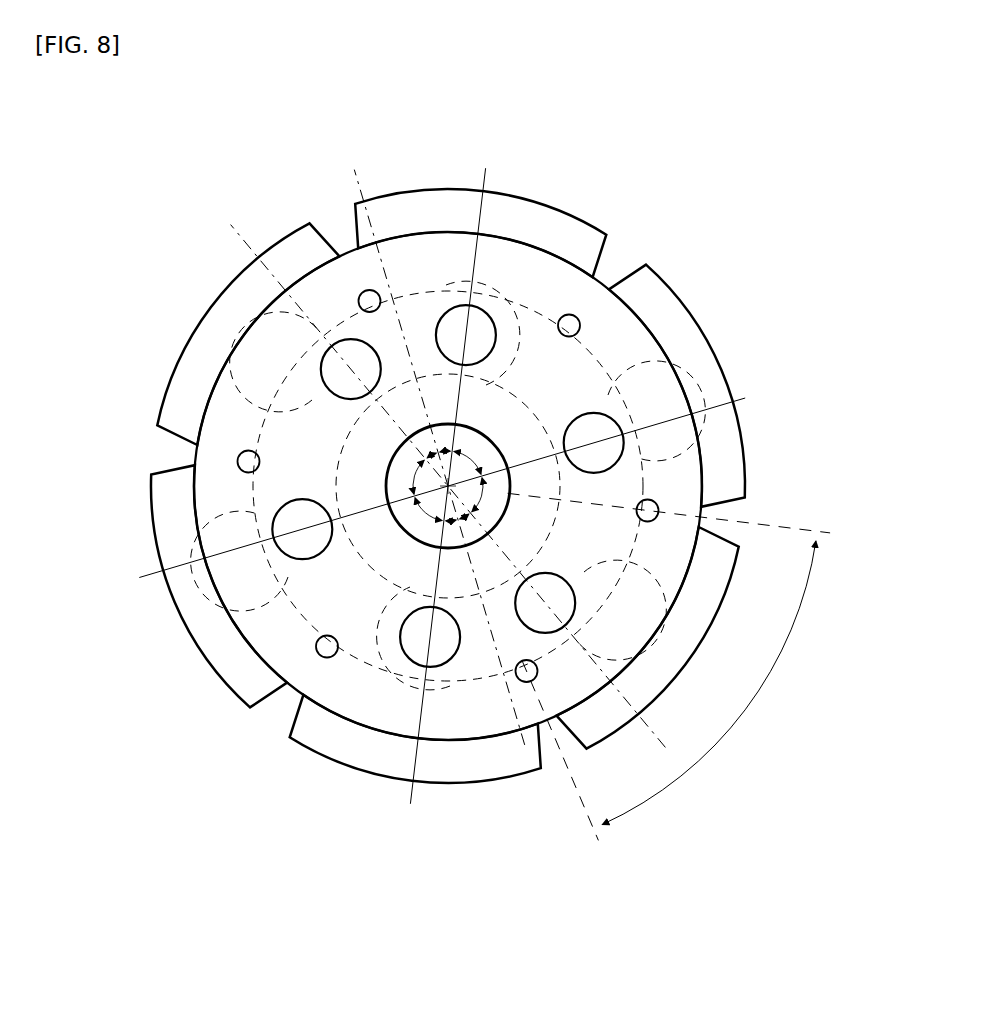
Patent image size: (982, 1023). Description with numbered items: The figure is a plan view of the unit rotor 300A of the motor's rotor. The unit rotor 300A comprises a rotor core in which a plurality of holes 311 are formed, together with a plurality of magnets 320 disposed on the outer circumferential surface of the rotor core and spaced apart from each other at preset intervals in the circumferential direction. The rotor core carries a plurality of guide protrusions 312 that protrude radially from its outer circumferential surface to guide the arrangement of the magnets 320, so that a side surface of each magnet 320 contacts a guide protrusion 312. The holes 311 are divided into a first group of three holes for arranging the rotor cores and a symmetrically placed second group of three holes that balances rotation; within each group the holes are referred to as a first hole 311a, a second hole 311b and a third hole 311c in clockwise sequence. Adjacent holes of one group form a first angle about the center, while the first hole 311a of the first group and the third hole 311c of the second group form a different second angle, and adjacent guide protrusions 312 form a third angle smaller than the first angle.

The unit rotor 300A is at (107, 122).
The magnets 320 is at (168, 511).
The guide protrusions 312 is at (340, 232).
The holes 311 is at (418, 491).
The first hole 311a is at (402, 503).
The second hole 311b is at (418, 481).
The third hole 311c is at (497, 825).